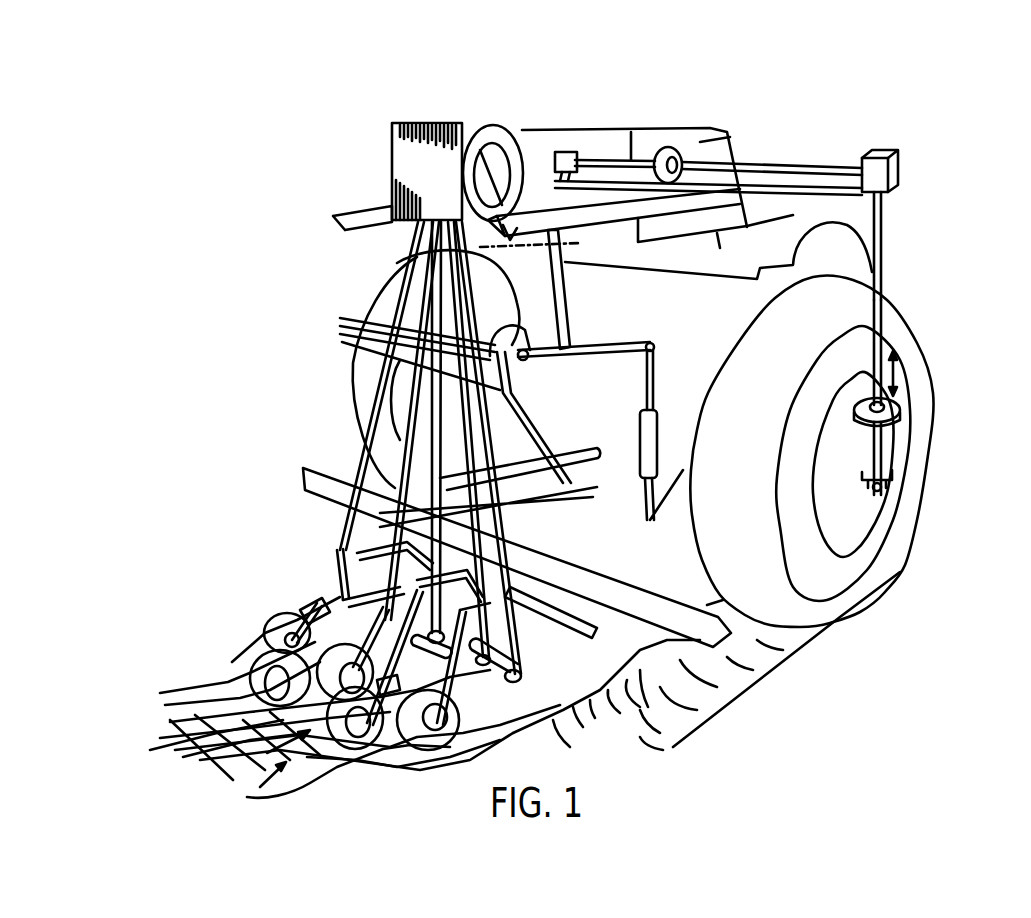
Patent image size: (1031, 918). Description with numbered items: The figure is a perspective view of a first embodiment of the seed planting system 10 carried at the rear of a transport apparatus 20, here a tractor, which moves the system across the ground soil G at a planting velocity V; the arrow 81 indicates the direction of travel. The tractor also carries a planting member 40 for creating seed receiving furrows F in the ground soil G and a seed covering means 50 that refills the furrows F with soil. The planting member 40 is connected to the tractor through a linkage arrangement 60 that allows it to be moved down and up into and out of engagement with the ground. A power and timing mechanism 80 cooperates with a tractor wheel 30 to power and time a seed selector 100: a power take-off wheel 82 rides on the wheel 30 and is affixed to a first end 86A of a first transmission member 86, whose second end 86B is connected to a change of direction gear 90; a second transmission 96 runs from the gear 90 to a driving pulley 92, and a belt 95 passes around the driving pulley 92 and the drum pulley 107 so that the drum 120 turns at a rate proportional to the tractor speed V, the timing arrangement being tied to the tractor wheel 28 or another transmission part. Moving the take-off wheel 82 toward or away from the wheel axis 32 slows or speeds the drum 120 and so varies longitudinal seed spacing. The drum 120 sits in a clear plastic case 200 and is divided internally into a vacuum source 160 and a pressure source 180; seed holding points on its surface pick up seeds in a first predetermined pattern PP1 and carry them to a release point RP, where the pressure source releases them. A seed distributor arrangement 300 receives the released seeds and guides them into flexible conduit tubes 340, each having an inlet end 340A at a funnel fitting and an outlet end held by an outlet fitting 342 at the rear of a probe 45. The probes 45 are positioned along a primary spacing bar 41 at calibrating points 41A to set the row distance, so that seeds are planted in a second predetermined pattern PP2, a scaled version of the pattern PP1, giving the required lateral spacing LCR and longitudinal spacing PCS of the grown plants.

The seed planting system 10 is at (354, 196).
The transport apparatus 20 is at (768, 147).
The tractor wheel 28 is at (867, 520).
The wheel 30 is at (877, 573).
The wheel axis 32 is at (913, 478).
The planting member 40 is at (331, 550).
The primary spacing bar 41 is at (617, 570).
The calibrating points 41A is at (560, 486).
The probe 45 is at (412, 683).
The seed covering means 50 is at (276, 614).
The linkage arrangement 60 is at (585, 359).
The power and timing mechanism 80 is at (912, 333).
The direction of travel 81 is at (907, 187).
The power take-off wheel 82 is at (897, 400).
The first transmission member 86 is at (883, 310).
The first end of first transmission member 86A is at (888, 460).
The second end of first transmission member 86B is at (882, 235).
The change of direction gear 90 is at (898, 175).
The driving pulley 92 is at (677, 137).
The belt 95 is at (630, 137).
The second transmission 96 is at (833, 160).
The seed selector 100 is at (391, 147).
The drum pulley 107 is at (493, 127).
The drum 120 is at (535, 130).
The vacuum source 160 is at (527, 130).
The pressure source 180 is at (592, 283).
The case 200 is at (500, 127).
The seed distributor arrangement 300 is at (343, 245).
The conduit tubes 340 is at (392, 448).
The inlet end 340A is at (397, 230).
The outlet fitting 342 is at (495, 656).
The longitudinal spacing PCS is at (240, 678).
The lateral spacing LCR is at (180, 697).
The second predetermined pattern PP2 is at (173, 748).
The first predetermined pattern PP1 is at (480, 130).
The release point RP is at (467, 127).
The furrows F is at (272, 778).
The velocity V is at (897, 467).
The ground soil G is at (810, 727).